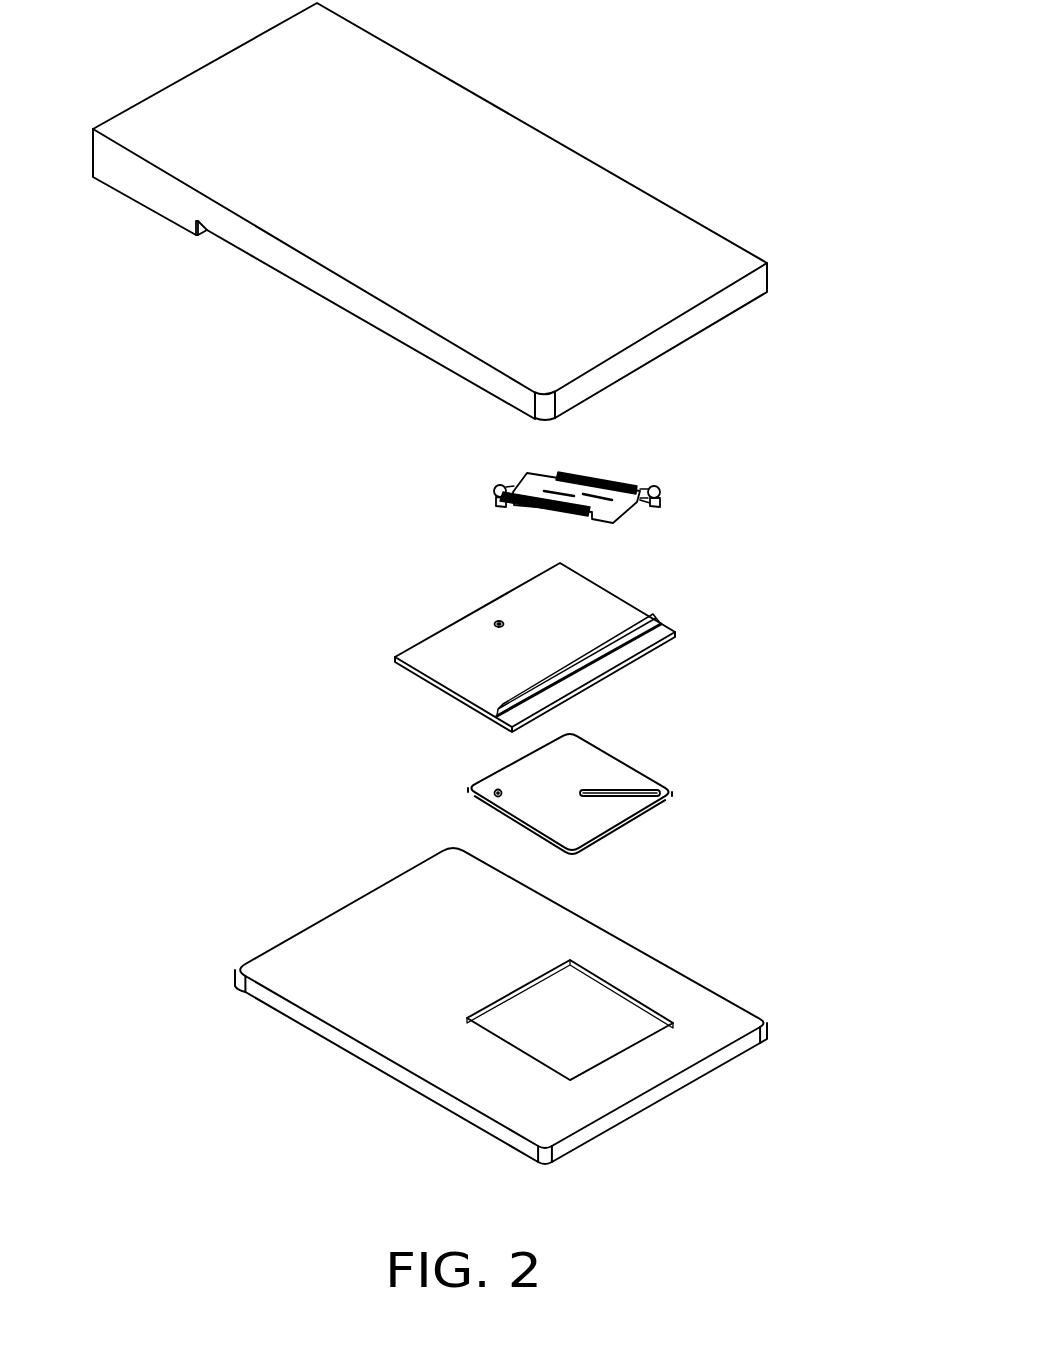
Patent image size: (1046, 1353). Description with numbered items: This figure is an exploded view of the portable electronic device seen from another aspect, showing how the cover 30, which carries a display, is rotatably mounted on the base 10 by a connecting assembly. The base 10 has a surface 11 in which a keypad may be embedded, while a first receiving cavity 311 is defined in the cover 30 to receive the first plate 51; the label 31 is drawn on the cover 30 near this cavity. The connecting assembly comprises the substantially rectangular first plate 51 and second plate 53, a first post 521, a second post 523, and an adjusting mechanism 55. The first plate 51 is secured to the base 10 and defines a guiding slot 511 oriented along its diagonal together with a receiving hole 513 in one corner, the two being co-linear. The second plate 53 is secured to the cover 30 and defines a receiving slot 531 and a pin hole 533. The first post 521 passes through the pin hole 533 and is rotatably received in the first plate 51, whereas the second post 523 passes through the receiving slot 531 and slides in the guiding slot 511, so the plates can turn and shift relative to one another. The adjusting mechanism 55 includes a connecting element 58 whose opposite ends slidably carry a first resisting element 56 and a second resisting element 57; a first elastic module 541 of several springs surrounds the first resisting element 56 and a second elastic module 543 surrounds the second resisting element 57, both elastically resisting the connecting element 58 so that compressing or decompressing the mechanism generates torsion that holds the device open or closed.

The base 10 is at (710, 313).
The surface 11 is at (342, 308).
The cover 30 is at (532, 1006).
The top wall of base 31 is at (713, 1027).
The first receiving cavity 311 is at (602, 1010).
The first plate 51 is at (578, 784).
The guiding slot 511 is at (657, 788).
The receiving hole 513 is at (497, 790).
The second plate 53 is at (576, 645).
The receiving slot 531 is at (641, 626).
The pin hole 533 is at (497, 619).
The adjusting mechanism 55 is at (595, 483).
The first resisting element 56 is at (500, 504).
The second resisting element 57 is at (643, 508).
The connecting element 58 is at (542, 475).
The first post 521 is at (496, 489).
The second post 523 is at (661, 500).
The first elastic module 541 is at (537, 506).
The second elastic module 543 is at (598, 478).